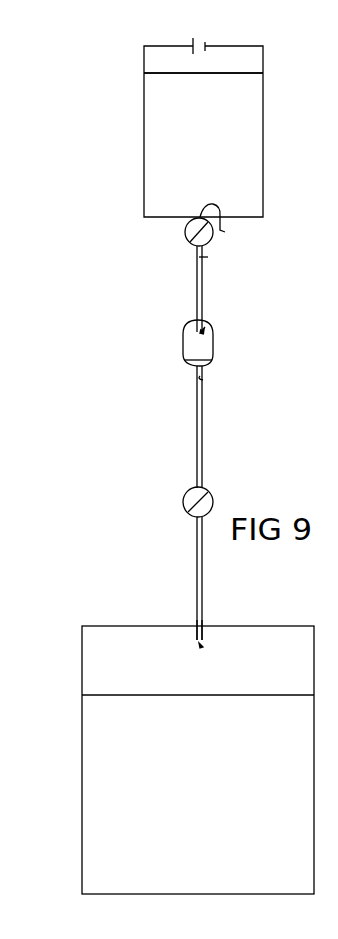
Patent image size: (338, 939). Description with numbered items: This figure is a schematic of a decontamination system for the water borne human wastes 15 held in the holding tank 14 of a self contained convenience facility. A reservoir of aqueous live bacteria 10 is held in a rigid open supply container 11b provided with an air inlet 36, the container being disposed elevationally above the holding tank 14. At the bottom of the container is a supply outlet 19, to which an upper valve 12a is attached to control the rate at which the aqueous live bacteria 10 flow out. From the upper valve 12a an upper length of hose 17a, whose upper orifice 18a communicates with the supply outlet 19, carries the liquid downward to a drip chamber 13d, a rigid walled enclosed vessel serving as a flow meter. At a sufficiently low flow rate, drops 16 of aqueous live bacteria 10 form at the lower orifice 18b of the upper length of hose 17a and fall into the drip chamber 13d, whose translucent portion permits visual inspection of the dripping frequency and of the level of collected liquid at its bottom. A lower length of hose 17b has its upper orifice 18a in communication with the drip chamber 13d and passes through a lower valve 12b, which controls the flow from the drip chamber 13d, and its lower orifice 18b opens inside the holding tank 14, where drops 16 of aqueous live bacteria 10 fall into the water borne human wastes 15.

The aqueous live bacteria 10 is at (154, 140).
The open supply container 11b is at (144, 60).
The air inlet 36 is at (198, 40).
The supply outlet 19 is at (226, 227).
The upper valve 12a is at (185, 237).
The lower valve 12b is at (183, 505).
The upper length of hose 17a is at (196, 297).
The lower length of hose 17b is at (196, 433).
The upper orifice 18a is at (203, 258).
The lower orifice 18b is at (207, 325).
The drops 16 is at (195, 643).
The drip chamber 13d is at (183, 352).
The holding tank 14 is at (82, 660).
The water borne human wastes 15 is at (98, 780).